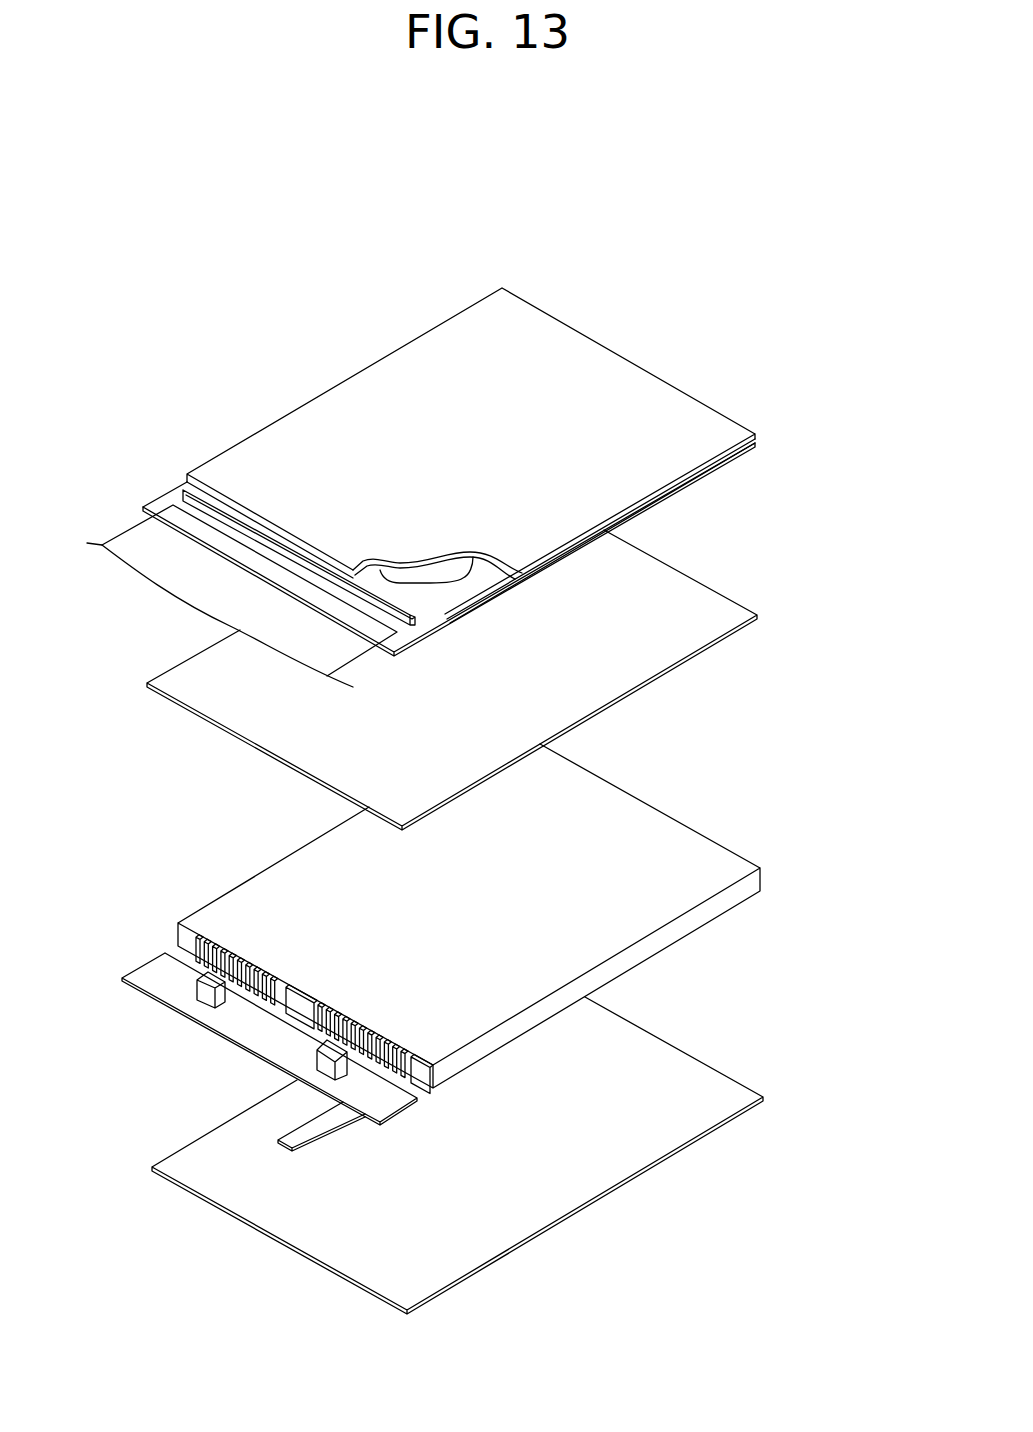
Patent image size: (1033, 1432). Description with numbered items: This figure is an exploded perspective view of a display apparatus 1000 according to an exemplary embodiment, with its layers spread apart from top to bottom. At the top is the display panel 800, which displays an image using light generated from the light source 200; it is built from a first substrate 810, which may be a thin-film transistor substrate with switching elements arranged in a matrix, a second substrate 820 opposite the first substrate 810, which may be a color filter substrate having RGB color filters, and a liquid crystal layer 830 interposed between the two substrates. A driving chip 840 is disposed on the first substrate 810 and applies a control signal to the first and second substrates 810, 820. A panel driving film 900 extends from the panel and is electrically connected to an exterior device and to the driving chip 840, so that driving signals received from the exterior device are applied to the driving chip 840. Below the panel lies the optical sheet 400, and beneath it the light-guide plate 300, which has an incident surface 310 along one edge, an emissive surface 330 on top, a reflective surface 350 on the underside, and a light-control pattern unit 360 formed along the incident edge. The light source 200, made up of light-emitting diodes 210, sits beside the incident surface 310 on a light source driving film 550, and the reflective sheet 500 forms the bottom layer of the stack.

The display apparatus 1000 is at (418, 273).
The panel driving film 900 is at (143, 537).
The display panel 800 is at (633, 576).
The second substrate 820 is at (535, 551).
The first substrate 810 is at (487, 580).
The liquid crystal layer 830 is at (440, 575).
The driving chip 840 is at (415, 616).
The optical sheet 400 is at (703, 595).
The light-guide plate 300 is at (680, 811).
The emissive surface 330 is at (620, 892).
The reflective surface 350 is at (742, 907).
The light-control pattern unit 360 is at (243, 949).
The incident surface 310 is at (398, 1078).
The reflective sheet 500 is at (707, 1078).
The light source driving film 550 is at (157, 972).
The light source 200 is at (191, 995).
The light-emitting diodes 210 is at (317, 1057).